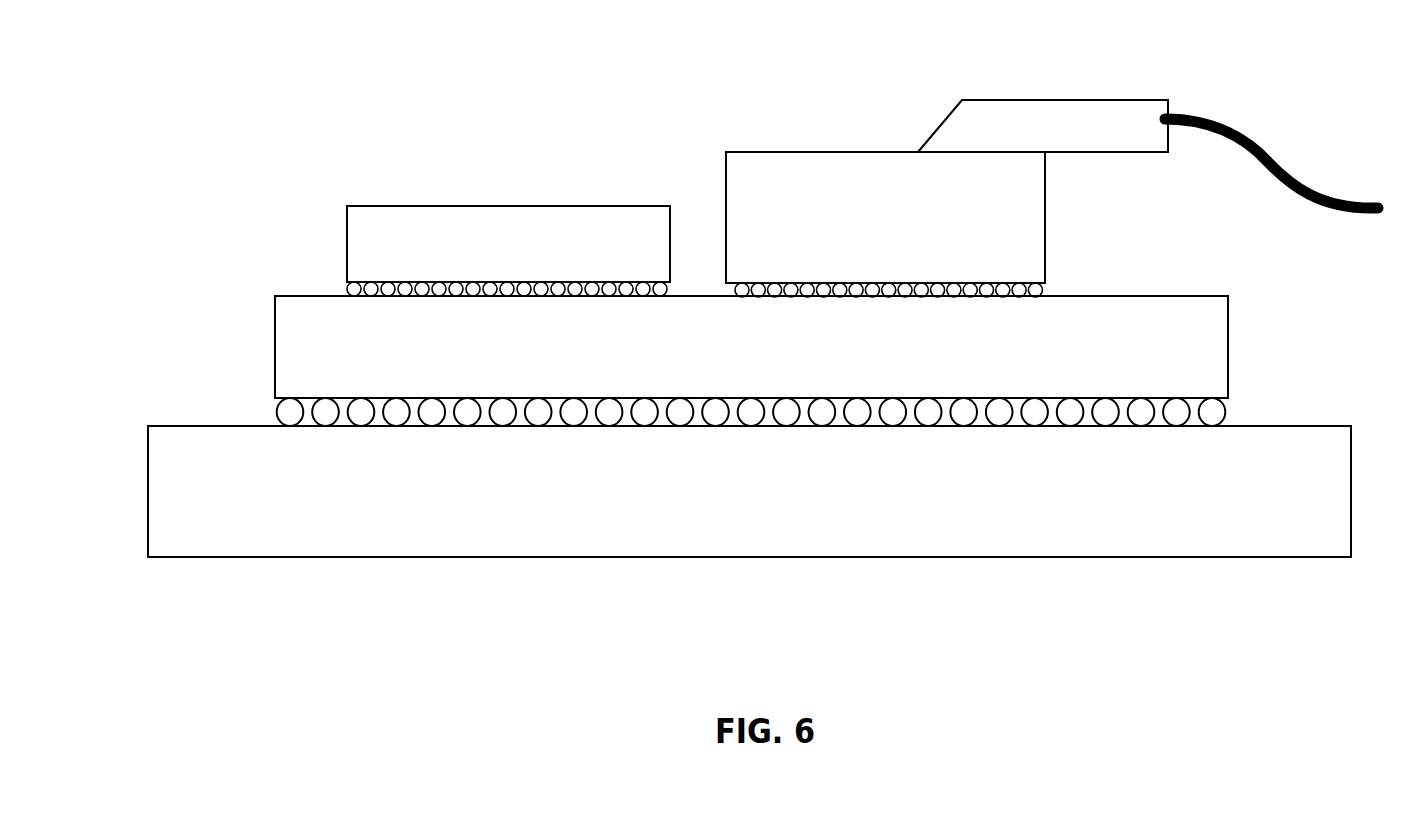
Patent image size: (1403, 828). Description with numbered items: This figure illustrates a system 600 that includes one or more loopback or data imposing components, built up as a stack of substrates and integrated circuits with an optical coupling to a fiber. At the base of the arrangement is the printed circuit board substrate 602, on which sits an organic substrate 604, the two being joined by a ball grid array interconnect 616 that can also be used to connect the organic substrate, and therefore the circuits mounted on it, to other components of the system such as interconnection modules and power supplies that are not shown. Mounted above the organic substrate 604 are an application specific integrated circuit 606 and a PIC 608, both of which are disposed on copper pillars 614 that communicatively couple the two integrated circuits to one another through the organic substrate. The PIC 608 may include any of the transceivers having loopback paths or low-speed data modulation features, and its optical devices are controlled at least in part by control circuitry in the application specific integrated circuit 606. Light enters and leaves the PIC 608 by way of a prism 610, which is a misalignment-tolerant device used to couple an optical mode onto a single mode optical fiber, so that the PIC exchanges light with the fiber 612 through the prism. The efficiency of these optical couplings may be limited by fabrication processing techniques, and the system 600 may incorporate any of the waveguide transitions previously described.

The system 600 is at (385, 121).
The printed circuit board substrate 602 is at (749, 491).
The organic substrate 604 is at (751, 347).
The application specific integrated circuit 606 is at (508, 244).
The PIC 608 is at (885, 217).
The prism 610 is at (1043, 126).
The fiber 612 is at (1243, 127).
The copper pillars 614 is at (743, 285).
The ball grid array interconnect 616 is at (275, 408).